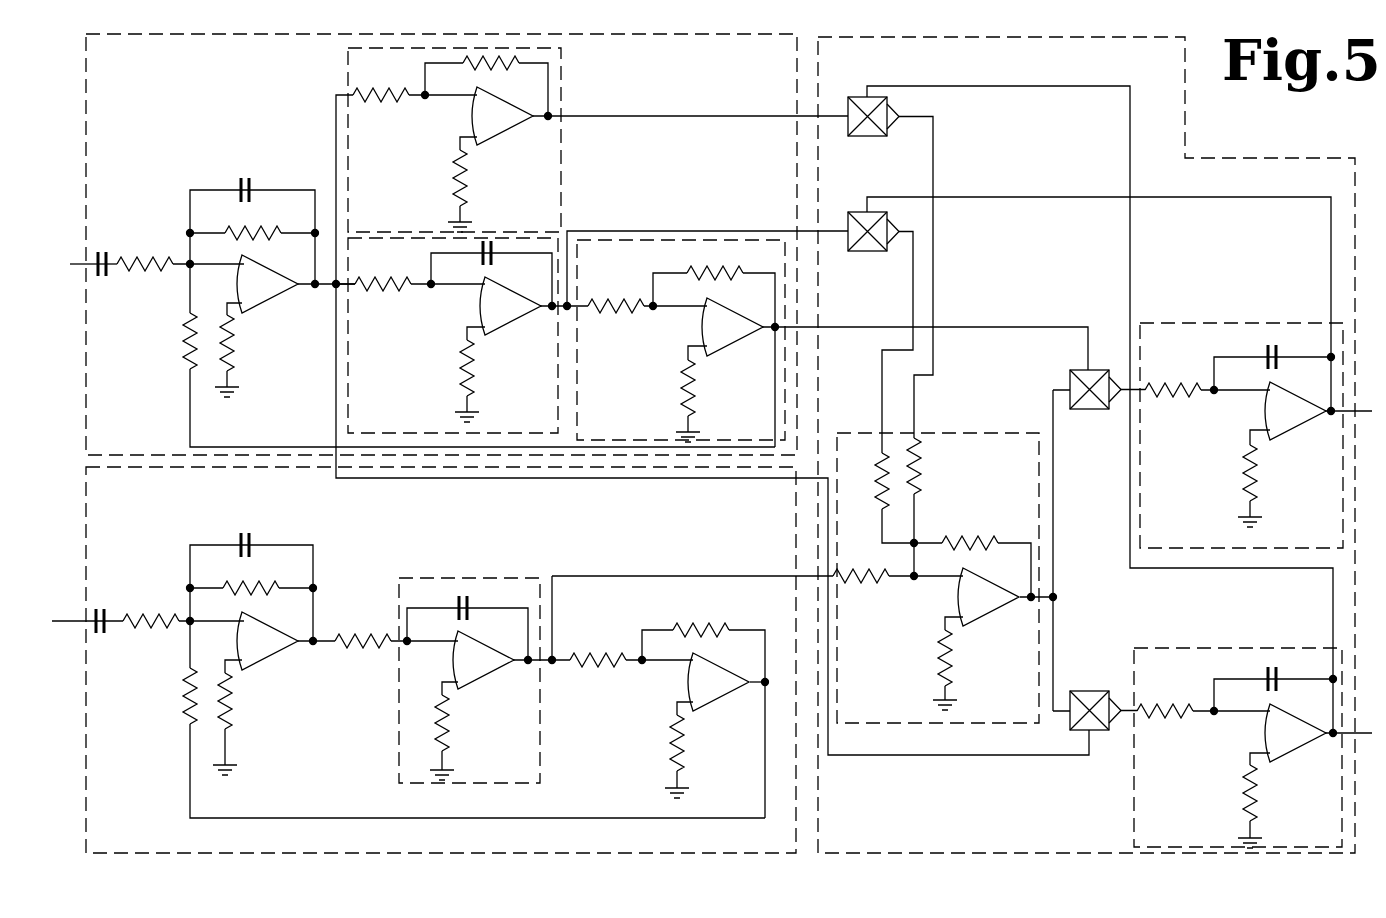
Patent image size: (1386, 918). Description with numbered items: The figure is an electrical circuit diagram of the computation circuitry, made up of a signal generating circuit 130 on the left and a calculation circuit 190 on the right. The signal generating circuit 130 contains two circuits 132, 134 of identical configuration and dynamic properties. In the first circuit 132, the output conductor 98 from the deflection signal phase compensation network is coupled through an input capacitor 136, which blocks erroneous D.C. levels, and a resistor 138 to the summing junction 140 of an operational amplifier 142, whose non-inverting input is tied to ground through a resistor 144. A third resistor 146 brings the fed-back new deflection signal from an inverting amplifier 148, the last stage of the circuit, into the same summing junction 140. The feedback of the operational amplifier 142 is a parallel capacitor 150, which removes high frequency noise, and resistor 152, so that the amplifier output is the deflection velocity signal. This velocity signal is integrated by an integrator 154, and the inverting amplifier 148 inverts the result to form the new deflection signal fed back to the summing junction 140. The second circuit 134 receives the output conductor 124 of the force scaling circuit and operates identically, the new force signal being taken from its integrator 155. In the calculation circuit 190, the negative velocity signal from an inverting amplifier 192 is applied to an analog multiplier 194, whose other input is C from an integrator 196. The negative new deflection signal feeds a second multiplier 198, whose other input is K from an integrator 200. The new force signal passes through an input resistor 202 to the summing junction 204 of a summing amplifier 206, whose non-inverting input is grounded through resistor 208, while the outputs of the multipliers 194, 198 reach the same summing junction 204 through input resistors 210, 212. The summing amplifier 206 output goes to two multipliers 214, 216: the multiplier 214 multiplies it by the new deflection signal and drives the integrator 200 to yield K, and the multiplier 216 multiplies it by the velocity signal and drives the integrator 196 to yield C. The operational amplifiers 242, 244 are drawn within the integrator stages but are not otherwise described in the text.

The output conductor 98 is at (80, 266).
The output conductor 124 is at (72, 620).
The signal generating circuit 130 is at (696, 33).
The generation circuit 132 is at (184, 144).
The second circuit 134 is at (167, 532).
The input capacitor 136 is at (110, 257).
The resistor 138 is at (158, 259).
The summing junction 140 is at (192, 268).
The operational amplifier 142 is at (278, 303).
The resistor 144 is at (237, 348).
The third resistor 146 is at (185, 340).
The inverting amplifier 148 is at (636, 413).
The capacitor 150 is at (252, 184).
The resistor 152 is at (266, 232).
The integrator 154 is at (402, 411).
The integrator 155 is at (542, 752).
The calculation circuit 190 is at (1186, 141).
The inverting amplifier 192 is at (563, 75).
The analog multiplier 194 is at (891, 137).
The integrator 196 is at (1207, 648).
The second multiplier 198 is at (891, 251).
The integrator 200 is at (1201, 323).
The input resistor 202 is at (860, 590).
The summing junction 204 is at (912, 580).
The summing amplifier 206 is at (991, 432).
The resistor 208 is at (950, 660).
The input resistor 210 is at (882, 492).
The input resistor 212 is at (922, 455).
The multiplier 214 is at (1108, 405).
The second multiplier 216 is at (1114, 733).
The operational amplifier 242 is at (1334, 420).
The operational amplifier 244 is at (1334, 745).